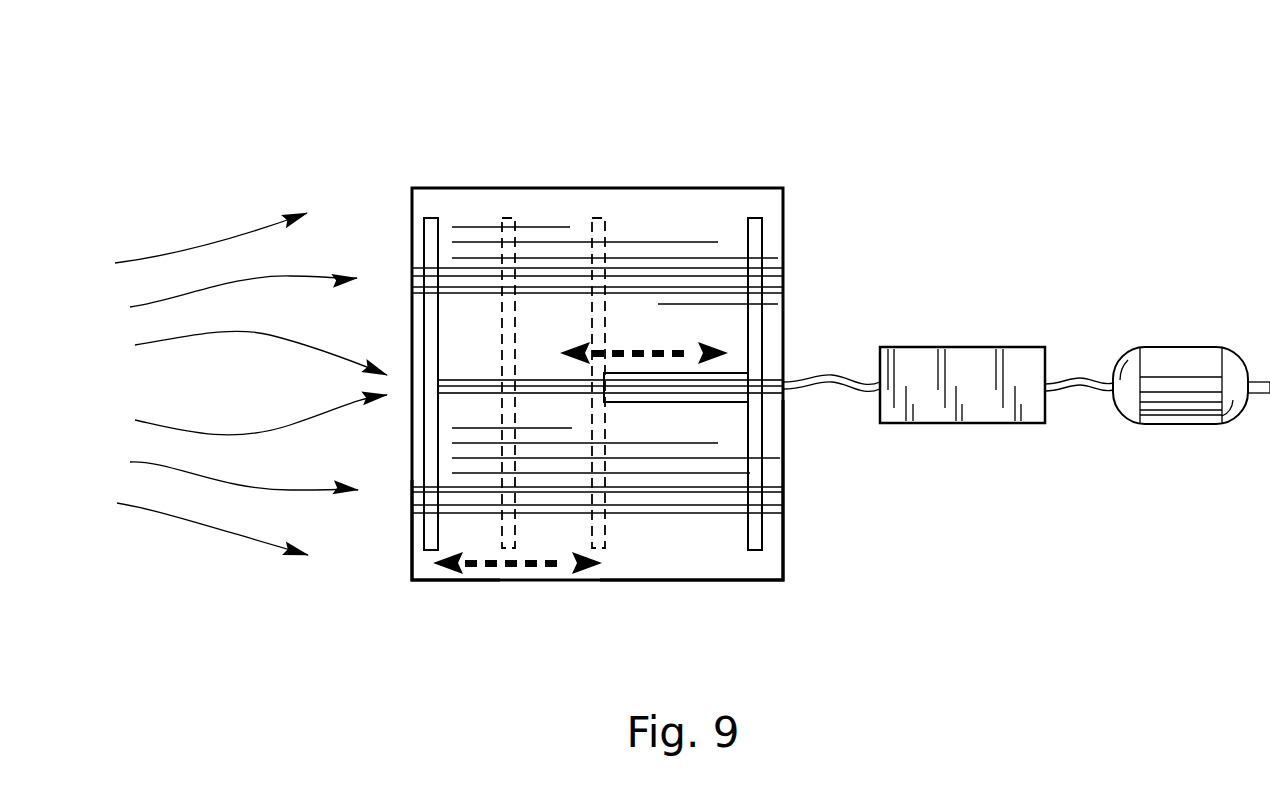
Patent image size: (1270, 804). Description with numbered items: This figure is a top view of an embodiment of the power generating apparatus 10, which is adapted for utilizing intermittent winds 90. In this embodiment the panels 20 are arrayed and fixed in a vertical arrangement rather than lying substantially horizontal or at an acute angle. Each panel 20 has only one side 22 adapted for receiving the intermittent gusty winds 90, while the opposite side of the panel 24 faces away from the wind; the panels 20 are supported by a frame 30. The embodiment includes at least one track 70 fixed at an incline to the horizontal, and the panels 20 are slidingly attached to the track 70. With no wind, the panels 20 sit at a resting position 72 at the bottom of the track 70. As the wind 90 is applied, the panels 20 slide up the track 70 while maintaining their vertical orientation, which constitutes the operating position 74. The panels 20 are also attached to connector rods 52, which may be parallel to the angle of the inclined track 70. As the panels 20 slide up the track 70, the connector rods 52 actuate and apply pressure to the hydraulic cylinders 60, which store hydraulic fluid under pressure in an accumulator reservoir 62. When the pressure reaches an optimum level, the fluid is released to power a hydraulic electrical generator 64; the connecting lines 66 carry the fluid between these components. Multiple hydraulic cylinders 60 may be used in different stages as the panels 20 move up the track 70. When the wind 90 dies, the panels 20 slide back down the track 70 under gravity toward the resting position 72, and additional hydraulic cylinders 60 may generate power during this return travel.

The power generating apparatus 10 is at (292, 178).
The intermittent winds 90 is at (138, 302).
The panel 20 is at (430, 225).
The side of panel 22 is at (413, 243).
The side of panel opposite the wind-receiving side 24 is at (443, 258).
The frame 30 is at (773, 565).
The connector rods 52 is at (552, 380).
The hydraulic cylinders 60 is at (730, 372).
The accumulator reservoir 62 is at (985, 370).
The hydraulic electrical generator 64 is at (1160, 368).
The drive cable 66 is at (847, 383).
The track 70 is at (700, 502).
The resting position 72 is at (412, 528).
The operating position 74 is at (605, 568).